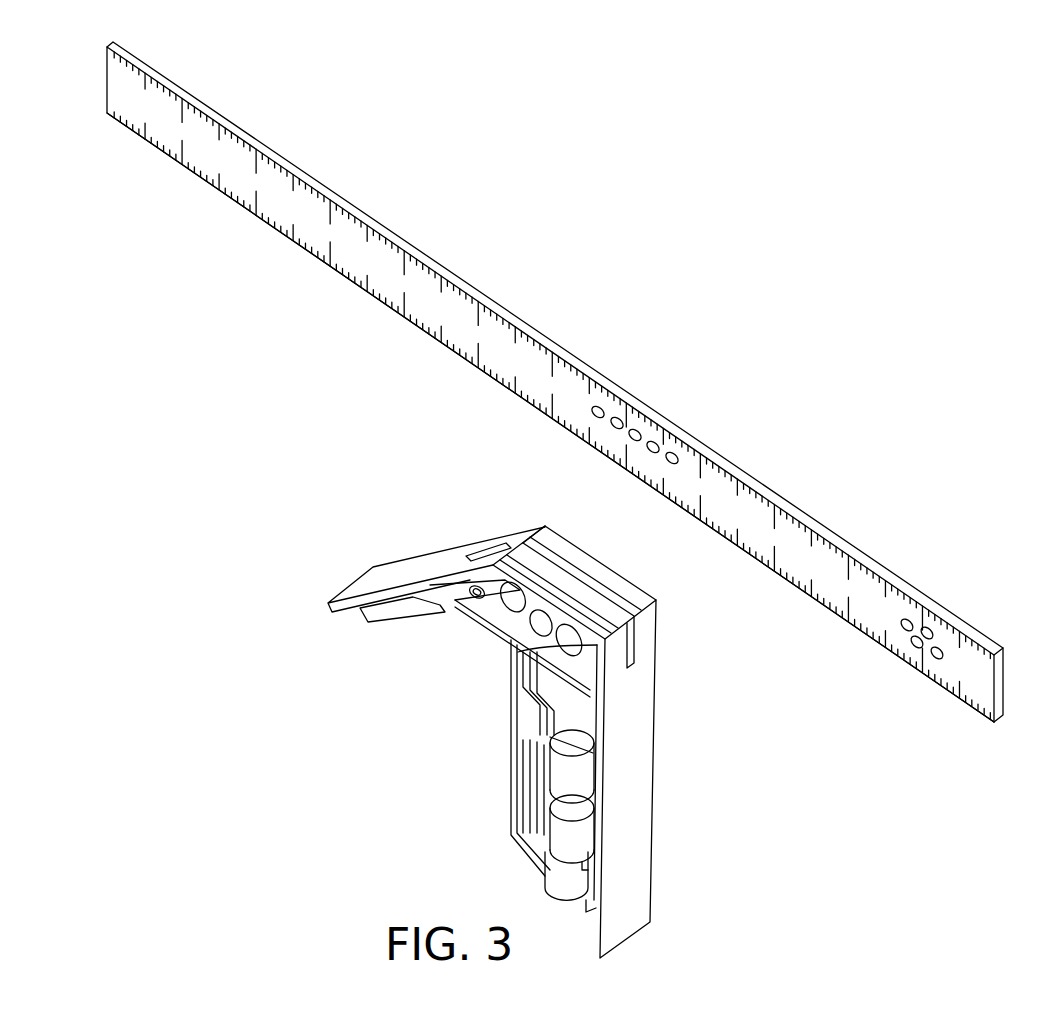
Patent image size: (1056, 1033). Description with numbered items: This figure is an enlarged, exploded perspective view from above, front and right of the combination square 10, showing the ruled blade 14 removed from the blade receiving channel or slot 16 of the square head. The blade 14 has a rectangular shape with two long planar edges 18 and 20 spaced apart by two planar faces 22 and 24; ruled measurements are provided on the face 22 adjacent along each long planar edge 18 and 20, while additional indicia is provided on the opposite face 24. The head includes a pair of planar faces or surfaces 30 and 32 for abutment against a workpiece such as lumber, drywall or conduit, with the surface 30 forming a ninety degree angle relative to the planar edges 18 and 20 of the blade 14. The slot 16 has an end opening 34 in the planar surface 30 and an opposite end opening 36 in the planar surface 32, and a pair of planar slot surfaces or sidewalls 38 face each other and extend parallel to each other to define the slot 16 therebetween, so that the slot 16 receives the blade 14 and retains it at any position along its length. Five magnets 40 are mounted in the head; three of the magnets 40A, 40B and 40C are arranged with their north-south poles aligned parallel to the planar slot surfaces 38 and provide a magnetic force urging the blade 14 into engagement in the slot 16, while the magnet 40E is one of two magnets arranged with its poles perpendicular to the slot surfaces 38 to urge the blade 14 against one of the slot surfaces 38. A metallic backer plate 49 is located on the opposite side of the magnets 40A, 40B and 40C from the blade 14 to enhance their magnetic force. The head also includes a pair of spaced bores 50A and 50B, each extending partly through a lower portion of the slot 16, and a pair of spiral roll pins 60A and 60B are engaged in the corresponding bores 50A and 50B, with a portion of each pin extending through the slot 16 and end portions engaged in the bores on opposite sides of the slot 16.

The combination square 10 is at (850, 216).
The ruled blade 14 is at (413, 204).
The blade receiving channel or slot 16 is at (551, 564).
The planar edge 18 is at (167, 81).
The planar edge 20 is at (170, 158).
The planar face 22 is at (290, 203).
The planar face 24 is at (1003, 674).
The planar face or surface 30 is at (628, 920).
The planar face or surface 32 is at (383, 578).
The end opening 34 is at (633, 643).
The end opening 36 is at (500, 552).
The planar slot surfaces or sidewalls 38 is at (573, 580).
The magnets 40 is at (482, 597).
The magnet 40A is at (493, 612).
The magnet 40B is at (500, 627).
The magnet 40C is at (533, 632).
The magnet 40E is at (580, 624).
The metallic backer plate 49 is at (485, 600).
The bore 50A is at (347, 598).
The spiral roll pin 60A is at (473, 600).
The bore 50B is at (676, 788).
The spiral roll pin 60B is at (582, 665).